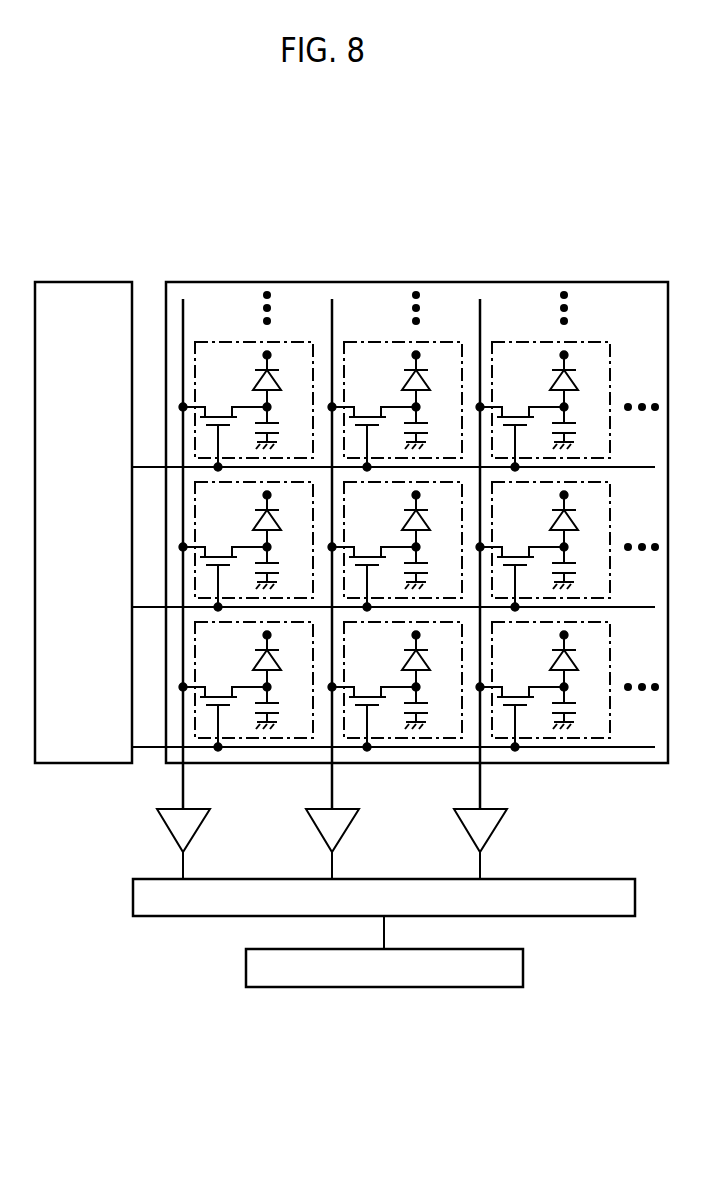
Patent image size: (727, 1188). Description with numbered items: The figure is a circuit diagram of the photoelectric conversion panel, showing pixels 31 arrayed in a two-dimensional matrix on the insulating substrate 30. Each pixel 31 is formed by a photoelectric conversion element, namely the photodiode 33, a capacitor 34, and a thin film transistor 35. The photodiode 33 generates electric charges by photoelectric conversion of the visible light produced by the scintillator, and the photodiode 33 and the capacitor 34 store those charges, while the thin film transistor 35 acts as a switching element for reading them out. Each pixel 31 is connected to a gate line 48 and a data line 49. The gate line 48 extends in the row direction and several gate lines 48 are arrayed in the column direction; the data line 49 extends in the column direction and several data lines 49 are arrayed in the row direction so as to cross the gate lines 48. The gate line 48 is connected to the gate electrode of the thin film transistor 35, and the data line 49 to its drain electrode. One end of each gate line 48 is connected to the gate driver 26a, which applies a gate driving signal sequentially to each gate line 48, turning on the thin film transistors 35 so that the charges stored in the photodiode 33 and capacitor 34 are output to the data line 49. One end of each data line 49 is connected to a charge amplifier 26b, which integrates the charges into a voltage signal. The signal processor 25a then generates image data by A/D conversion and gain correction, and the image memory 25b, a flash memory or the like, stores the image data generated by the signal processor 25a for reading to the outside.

The signal processor 25a is at (555, 918).
The image memory 25b is at (382, 989).
The gate driver 26a is at (82, 282).
The charge amplifier 26b is at (200, 827).
The insulating substrate 30 is at (412, 282).
The pixel 31 is at (597, 340).
The photoelectric conversion element (photodiode) 33 is at (280, 380).
The capacitor 34 is at (277, 422).
The thin film transistor 35 is at (217, 417).
The gate line 48 is at (150, 469).
The data line 49 is at (184, 790).